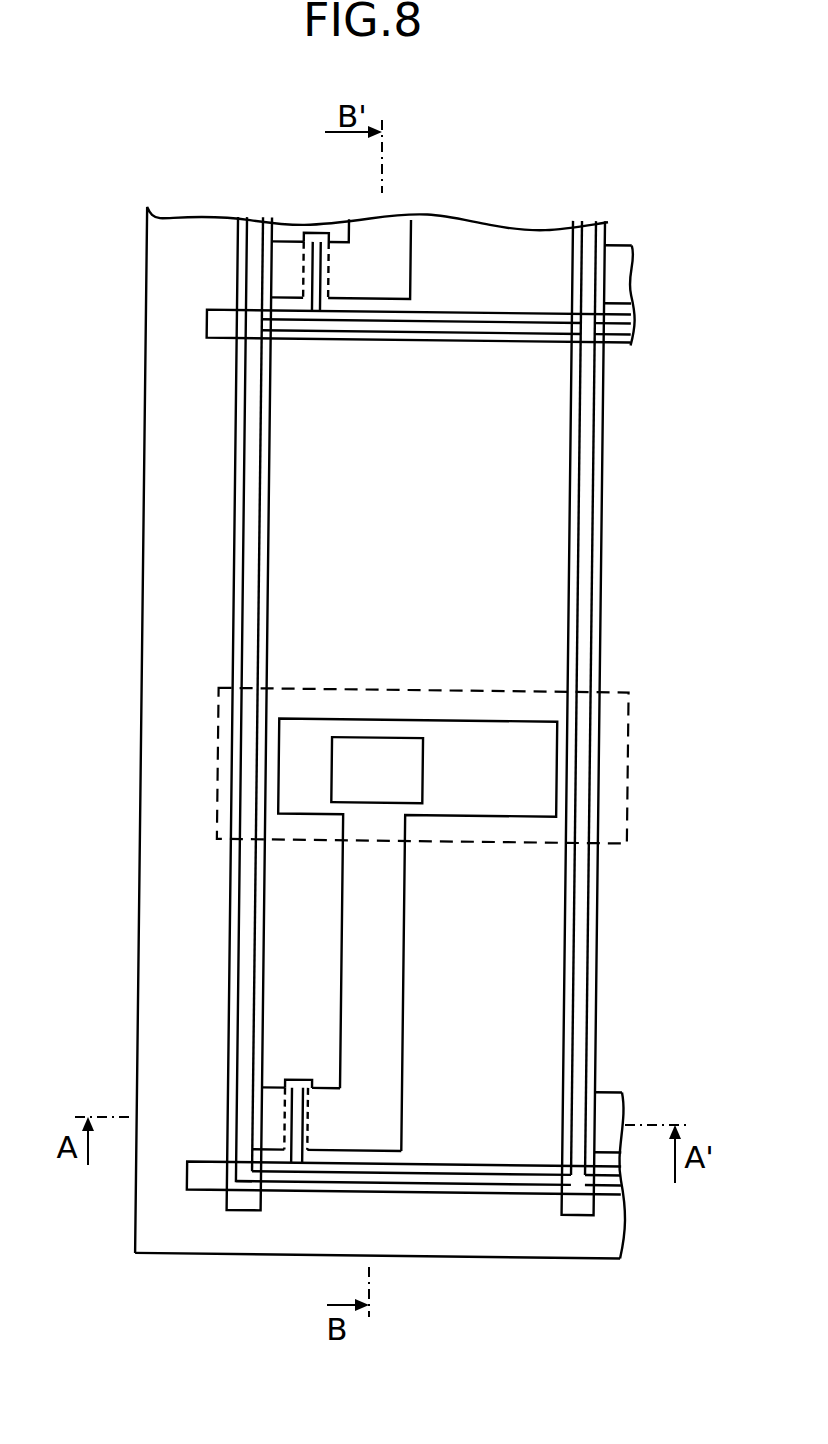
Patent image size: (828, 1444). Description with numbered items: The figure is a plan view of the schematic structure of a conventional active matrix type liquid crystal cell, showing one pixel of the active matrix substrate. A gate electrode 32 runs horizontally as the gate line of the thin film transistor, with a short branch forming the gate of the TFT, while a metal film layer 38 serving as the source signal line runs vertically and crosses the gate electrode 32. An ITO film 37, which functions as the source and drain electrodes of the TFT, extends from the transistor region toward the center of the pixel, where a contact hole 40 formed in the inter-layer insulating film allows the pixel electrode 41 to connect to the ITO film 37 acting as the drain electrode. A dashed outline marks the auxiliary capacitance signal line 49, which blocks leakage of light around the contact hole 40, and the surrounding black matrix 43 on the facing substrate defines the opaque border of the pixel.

The gate electrode 32 is at (318, 233).
The ITO film 37 is at (390, 925).
The metal film layer 38 is at (243, 1202).
The contact hole 40 is at (404, 738).
The pixel electrode 41 is at (442, 564).
The black matrix 43 is at (203, 230).
The auxiliary capacitance signal line 49 is at (630, 712).